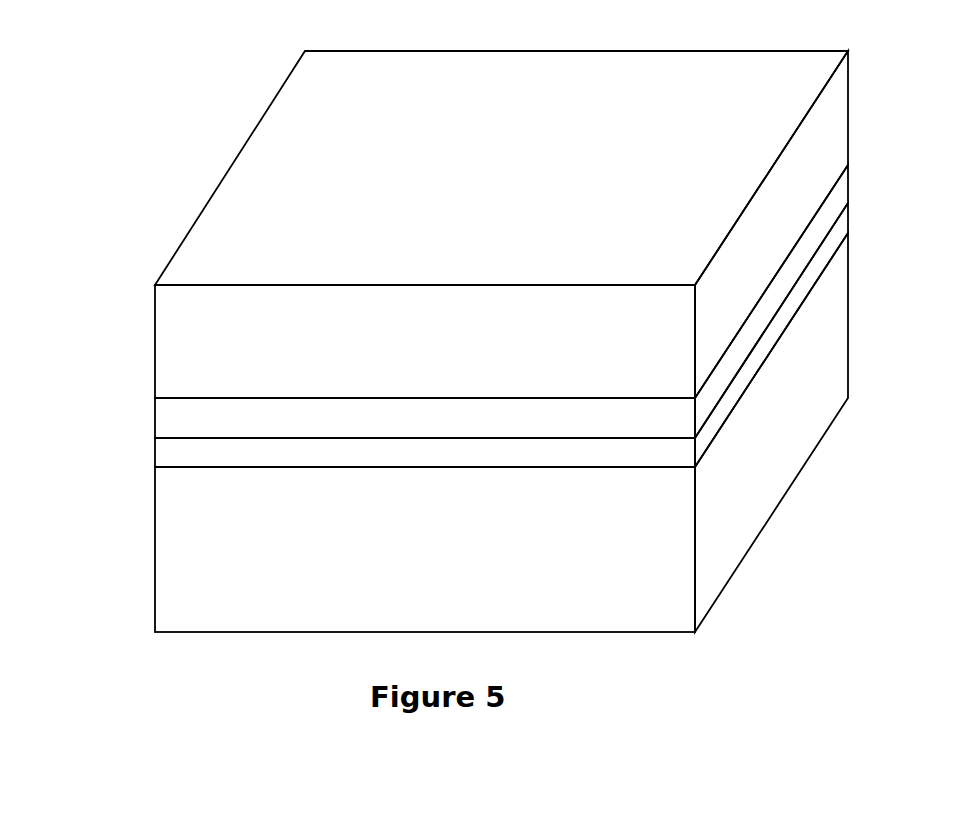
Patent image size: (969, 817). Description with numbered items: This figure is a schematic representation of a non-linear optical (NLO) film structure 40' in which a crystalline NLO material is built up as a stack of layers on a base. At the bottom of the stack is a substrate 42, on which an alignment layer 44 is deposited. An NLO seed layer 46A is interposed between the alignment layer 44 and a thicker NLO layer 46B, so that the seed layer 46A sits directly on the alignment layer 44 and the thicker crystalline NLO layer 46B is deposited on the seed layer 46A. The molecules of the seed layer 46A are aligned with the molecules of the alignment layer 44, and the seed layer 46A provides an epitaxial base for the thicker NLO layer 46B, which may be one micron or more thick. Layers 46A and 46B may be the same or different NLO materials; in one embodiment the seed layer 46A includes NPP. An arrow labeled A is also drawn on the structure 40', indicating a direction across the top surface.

The NLO film structure 40' is at (467, 163).
The thicker crystalline NLO layer 46B is at (155, 334).
The NLO seed layer 46A is at (155, 420).
The alignment layer 44 is at (155, 461).
The substrate 42 is at (155, 546).
The direction arrow A is at (413, 137).